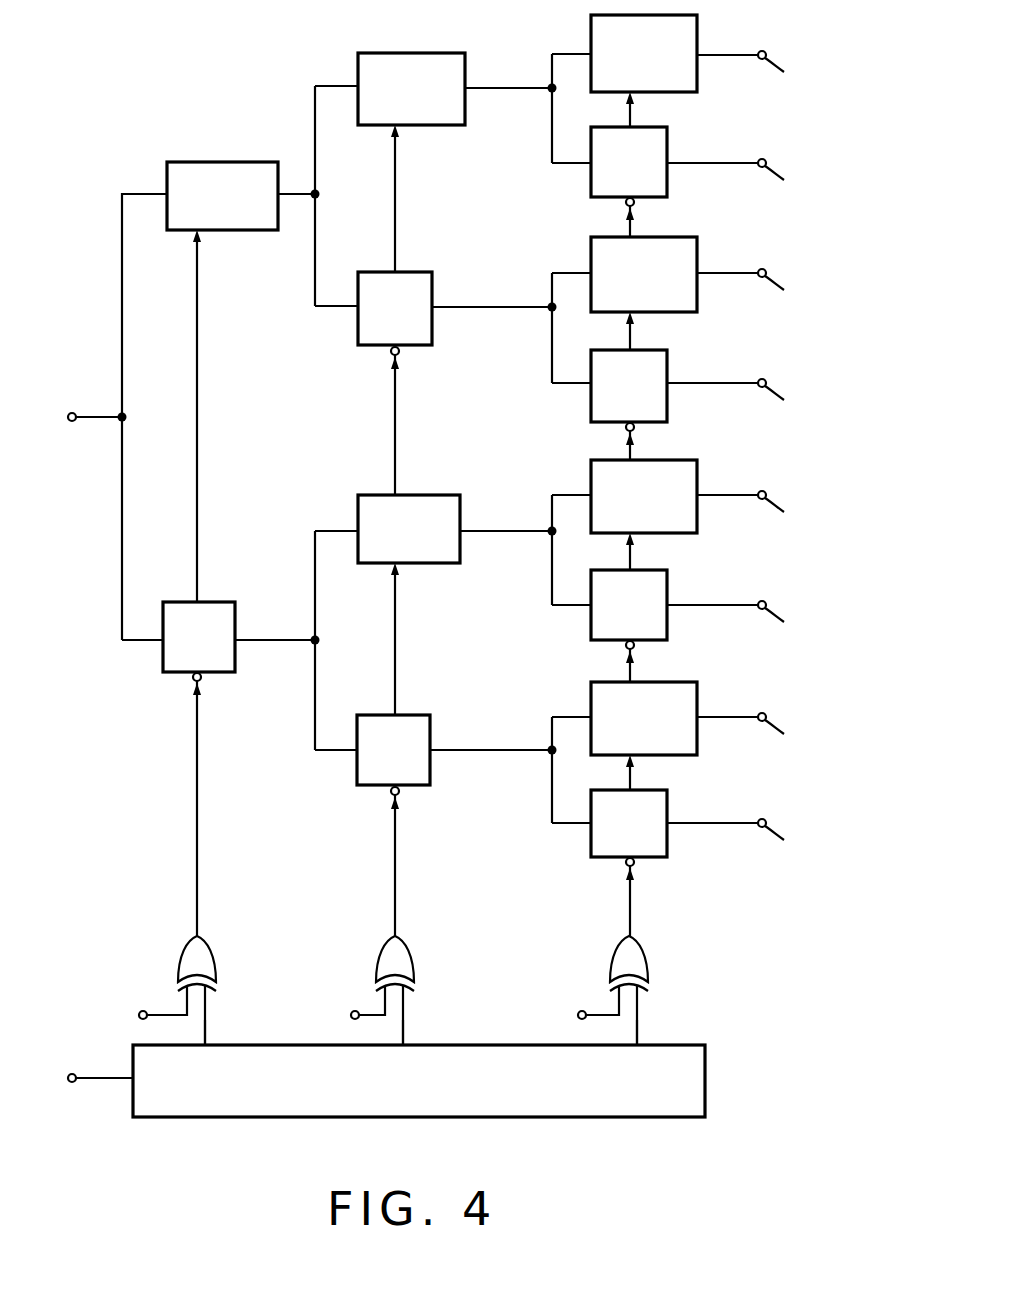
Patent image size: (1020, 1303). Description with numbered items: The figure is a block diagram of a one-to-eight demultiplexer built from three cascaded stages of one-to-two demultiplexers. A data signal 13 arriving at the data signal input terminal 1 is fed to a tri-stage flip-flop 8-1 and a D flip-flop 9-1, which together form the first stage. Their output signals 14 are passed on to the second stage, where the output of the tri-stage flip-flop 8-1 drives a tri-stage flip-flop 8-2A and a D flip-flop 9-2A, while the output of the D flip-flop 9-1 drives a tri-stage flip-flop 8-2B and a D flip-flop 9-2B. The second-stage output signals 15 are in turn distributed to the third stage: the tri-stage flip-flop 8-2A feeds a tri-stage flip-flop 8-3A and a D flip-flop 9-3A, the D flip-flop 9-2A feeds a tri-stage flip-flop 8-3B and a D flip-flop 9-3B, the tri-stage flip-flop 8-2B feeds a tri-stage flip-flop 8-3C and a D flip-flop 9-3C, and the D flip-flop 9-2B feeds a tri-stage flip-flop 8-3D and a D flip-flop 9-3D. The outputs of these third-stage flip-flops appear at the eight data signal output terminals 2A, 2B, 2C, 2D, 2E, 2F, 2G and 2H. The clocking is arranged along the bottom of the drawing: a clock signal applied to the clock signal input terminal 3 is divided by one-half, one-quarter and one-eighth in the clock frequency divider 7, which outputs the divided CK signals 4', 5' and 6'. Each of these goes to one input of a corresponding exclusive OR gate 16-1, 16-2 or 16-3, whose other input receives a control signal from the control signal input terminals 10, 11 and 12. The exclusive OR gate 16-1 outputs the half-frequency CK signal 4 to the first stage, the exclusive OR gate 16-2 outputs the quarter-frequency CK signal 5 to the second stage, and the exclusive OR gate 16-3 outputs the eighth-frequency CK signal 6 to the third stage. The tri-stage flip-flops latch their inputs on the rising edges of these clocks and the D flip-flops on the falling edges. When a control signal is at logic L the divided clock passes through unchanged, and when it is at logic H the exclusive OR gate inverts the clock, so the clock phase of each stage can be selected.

The data signal input terminal 1 is at (72, 410).
The data signal output terminal 2A is at (791, 75).
The data signal output terminal 2B is at (791, 182).
The data signal output terminal 2C is at (791, 293).
The data signal output terminal 2D is at (792, 402).
The data signal output terminal 2E is at (790, 517).
The data signal output terminal 2F is at (790, 623).
The data signal output terminal 2G is at (792, 738).
The data signal output terminal 2H is at (792, 843).
The clock signal input terminal 3 is at (73, 1073).
The 1/2 CK signal 4 is at (211, 809).
The CK signal of 1/2 frequency 4' is at (224, 1019).
The 1/4 CK signal 5 is at (409, 866).
The CK signal of 1/4 frequency 5' is at (422, 1019).
The 1/8 CK signal 6 is at (610, 901).
The CK signal of 1/8 frequency 6' is at (656, 1019).
The clock frequency divider 7 is at (705, 1082).
The tri-stage flip-flop 8-1 is at (234, 160).
The tri-stage flip-flop 8-2A is at (430, 51).
The tri-stage flip-flop 8-2B is at (430, 494).
The tri-stage flip-flop 8-3A is at (697, 27).
The tri-stage flip-flop 8-3B is at (697, 249).
The tri-stage flip-flop 8-3C is at (697, 472).
The tri-stage flip-flop 8-3D is at (697, 694).
The D flip-flop 9-1 is at (222, 601).
The D flip-flop 9-2A is at (430, 271).
The D flip-flop 9-2B is at (427, 713).
The D flip-flop 9-3A is at (667, 139).
The D flip-flop 9-3B is at (667, 362).
The D flip-flop 9-3C is at (667, 582).
The D flip-flop 9-3D is at (667, 802).
The control signal input terminal 10 is at (141, 1010).
The control signal input terminal 11 is at (353, 1010).
The control signal input terminal 12 is at (580, 1010).
The signal 13 is at (122, 380).
The signals 14 is at (328, 610).
The signals 15 is at (565, 768).
The exclusive OR gate 16-1 is at (205, 943).
The exclusive OR gate 16-2 is at (403, 943).
The exclusive OR gate 16-3 is at (637, 943).